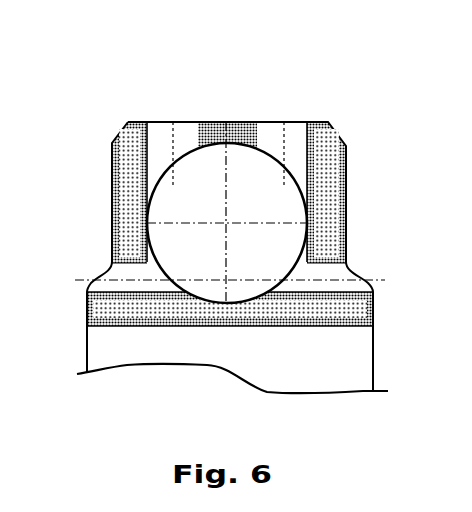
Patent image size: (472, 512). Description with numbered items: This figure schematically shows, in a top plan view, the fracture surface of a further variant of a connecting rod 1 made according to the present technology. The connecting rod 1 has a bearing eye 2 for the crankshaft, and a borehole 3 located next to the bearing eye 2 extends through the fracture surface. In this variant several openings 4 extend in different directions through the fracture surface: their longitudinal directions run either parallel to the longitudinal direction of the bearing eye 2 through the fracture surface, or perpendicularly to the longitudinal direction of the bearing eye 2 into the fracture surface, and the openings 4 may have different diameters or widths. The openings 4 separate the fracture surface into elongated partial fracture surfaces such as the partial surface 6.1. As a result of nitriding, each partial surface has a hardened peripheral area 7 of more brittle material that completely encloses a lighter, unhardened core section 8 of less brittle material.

The connecting rod 1 is at (250, 88).
The bearing eye 2 is at (135, 350).
The borehole 3 is at (190, 180).
The opening 4 is at (150, 143).
The partial fracture surface 6.1 is at (86, 303).
The hardened peripheral area 7 is at (108, 138).
The unhardened core section 8 is at (330, 121).